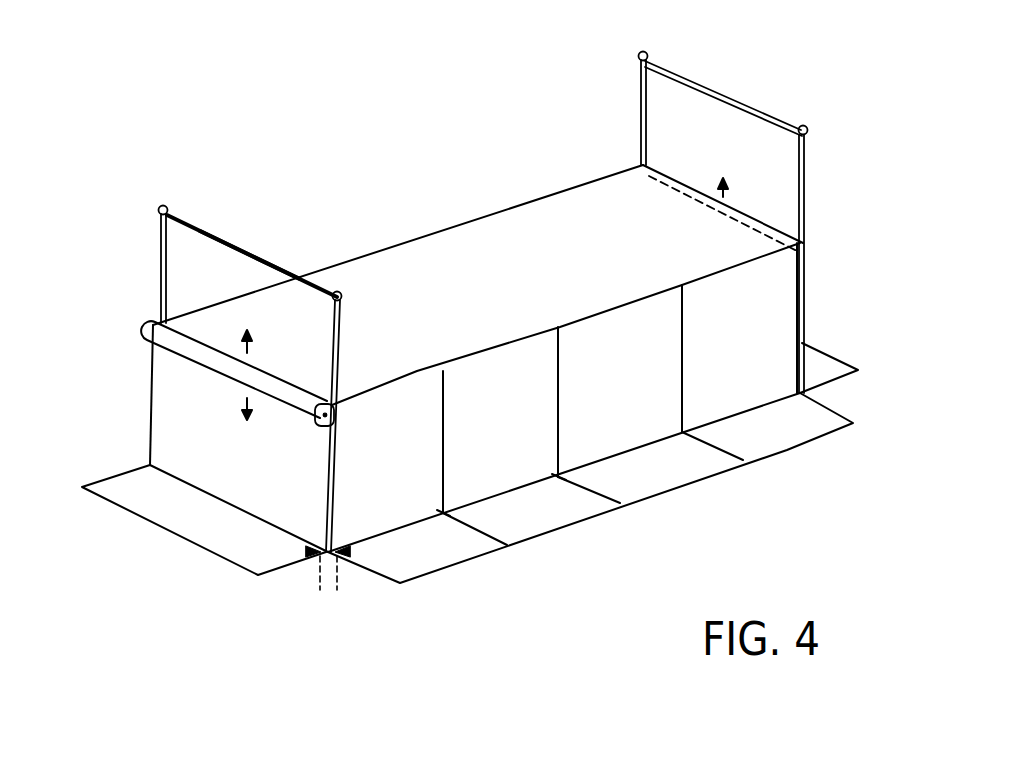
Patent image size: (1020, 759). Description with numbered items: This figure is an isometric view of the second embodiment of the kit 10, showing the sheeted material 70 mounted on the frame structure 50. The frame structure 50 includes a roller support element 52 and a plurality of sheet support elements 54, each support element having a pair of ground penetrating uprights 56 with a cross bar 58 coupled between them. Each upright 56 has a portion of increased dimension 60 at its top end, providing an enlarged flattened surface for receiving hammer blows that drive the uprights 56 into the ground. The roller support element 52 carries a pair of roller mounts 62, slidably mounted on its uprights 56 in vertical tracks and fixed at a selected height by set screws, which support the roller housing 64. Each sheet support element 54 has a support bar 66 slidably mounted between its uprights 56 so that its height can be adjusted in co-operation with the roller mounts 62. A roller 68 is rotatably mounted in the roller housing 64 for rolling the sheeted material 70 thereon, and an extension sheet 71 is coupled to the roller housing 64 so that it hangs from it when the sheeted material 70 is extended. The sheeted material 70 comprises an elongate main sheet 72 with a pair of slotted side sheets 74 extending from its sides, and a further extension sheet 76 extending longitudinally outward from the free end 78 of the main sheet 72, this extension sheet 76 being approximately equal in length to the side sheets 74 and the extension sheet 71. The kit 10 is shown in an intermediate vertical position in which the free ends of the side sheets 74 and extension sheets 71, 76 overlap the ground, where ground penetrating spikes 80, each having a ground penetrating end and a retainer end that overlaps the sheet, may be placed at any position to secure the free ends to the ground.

The kit 10 is at (258, 145).
The frame structure 50 is at (140, 273).
The roller support element 52 is at (247, 255).
The sheet support elements 54 is at (728, 102).
The ground penetrating uprights 56 is at (160, 293).
The cross bar 58 is at (207, 237).
The portion of increased dimension 60 is at (159, 210).
The roller mounts 62 is at (148, 328).
The roller housing 64 is at (295, 405).
The support bar 66 is at (690, 192).
The roller 68 is at (337, 408).
The sheeted material 70 is at (485, 246).
The extension sheet 71 is at (233, 485).
The main sheet 72 is at (447, 255).
The slotted side sheets 74 is at (607, 437).
The extension sheet 76 is at (817, 360).
The free end 78 is at (752, 220).
The ground penetrating spikes 80 is at (318, 578).